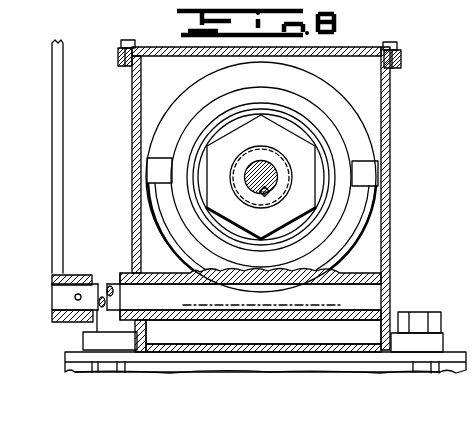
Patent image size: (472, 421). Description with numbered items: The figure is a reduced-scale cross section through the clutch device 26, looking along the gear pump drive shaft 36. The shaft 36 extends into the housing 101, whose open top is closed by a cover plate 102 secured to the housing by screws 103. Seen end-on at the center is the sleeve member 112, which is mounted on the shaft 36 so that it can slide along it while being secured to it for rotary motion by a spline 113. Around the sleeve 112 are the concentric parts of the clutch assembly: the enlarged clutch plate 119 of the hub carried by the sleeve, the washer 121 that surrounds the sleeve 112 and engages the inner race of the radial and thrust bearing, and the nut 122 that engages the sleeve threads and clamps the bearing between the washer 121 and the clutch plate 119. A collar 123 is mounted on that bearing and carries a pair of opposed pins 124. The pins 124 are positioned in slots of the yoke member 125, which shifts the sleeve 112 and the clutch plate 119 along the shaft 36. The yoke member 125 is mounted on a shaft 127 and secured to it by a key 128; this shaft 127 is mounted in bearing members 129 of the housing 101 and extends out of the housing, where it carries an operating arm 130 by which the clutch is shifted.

The clutch device 26 is at (279, 194).
The gear pump drive shaft 36 is at (250, 170).
The housing 101 is at (388, 215).
The cover plate 102 is at (331, 54).
The screws 103 is at (133, 42).
The sleeve member 112 is at (267, 152).
The spline 113 is at (262, 194).
The clutch plate 119 is at (336, 97).
The washer 121 is at (310, 128).
The nut 122 is at (220, 145).
The collar 123 is at (243, 92).
The pins 124 is at (352, 177).
The yoke member 125 is at (368, 203).
The shaft 127 is at (374, 295).
The key 128 is at (237, 315).
The bearing members 129 is at (172, 274).
The operating arm 130 is at (63, 83).